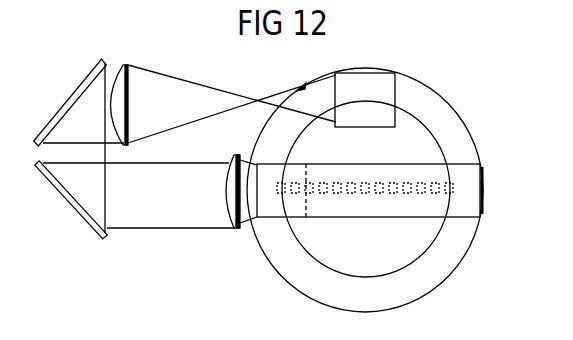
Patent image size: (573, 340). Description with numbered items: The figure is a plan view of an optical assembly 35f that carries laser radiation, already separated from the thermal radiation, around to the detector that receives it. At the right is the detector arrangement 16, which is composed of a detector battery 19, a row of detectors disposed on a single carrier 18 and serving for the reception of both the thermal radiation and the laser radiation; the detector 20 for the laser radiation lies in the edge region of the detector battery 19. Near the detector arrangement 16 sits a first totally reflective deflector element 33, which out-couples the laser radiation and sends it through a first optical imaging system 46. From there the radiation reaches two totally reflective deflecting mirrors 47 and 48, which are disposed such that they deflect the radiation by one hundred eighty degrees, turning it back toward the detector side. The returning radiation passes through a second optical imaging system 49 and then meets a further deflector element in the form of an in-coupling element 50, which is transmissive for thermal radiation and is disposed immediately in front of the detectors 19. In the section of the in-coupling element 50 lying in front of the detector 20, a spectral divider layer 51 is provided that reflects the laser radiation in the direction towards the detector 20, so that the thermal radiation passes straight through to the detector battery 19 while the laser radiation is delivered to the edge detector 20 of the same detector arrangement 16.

The detector arrangement 16 is at (463, 263).
The carrier 18 is at (430, 150).
The detector battery 19 is at (372, 189).
The detector 20 is at (282, 194).
The first totally reflective deflector element 33 is at (380, 87).
The optical assembly 35f is at (175, 78).
The first optical imaging system 46 is at (125, 65).
The totally reflective deflecting mirror 47 is at (72, 100).
The totally reflective deflecting mirror 48 is at (58, 195).
The second optical imaging system 49 is at (231, 226).
The in-coupling element 50 is at (453, 217).
The spectral divider layer 51 is at (308, 212).